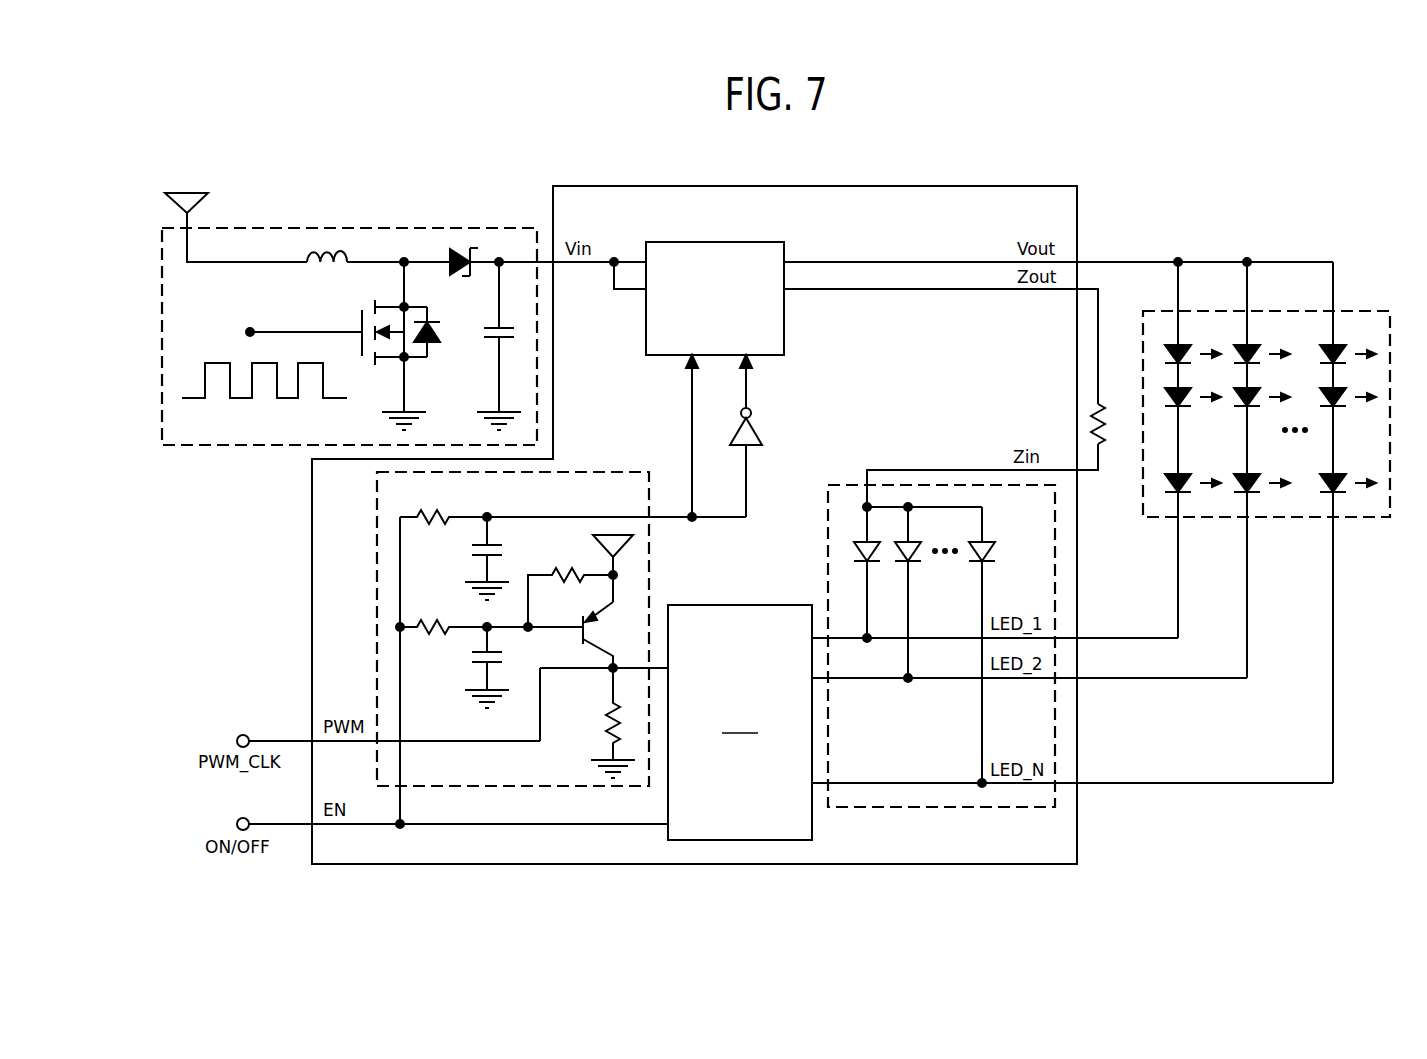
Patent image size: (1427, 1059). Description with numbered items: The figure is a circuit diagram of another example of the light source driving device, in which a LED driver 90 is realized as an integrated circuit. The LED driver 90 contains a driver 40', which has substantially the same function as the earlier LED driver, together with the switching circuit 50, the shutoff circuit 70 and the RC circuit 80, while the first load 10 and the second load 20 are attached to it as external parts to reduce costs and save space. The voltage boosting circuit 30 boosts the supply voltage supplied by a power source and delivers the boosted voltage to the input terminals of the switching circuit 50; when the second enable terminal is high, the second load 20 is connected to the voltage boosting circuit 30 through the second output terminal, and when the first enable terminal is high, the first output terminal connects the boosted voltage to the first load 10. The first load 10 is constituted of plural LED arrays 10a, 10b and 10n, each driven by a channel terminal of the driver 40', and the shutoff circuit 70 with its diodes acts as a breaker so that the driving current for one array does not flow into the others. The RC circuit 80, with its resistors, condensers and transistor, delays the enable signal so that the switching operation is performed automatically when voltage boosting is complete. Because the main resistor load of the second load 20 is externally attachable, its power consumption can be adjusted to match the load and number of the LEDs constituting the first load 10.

The first load 10 is at (1267, 520).
The LED array 10a is at (1193, 508).
The LED array 10b is at (1260, 508).
The LED array 10n is at (1347, 508).
The second load 20 is at (1100, 410).
The voltage boosting circuit 30 is at (499, 228).
The driver 40' is at (740, 701).
The switching circuit 50 is at (752, 242).
The shutoff circuit 70 is at (1020, 807).
The RC circuit 80 is at (652, 560).
The LED driver 90 is at (1045, 186).